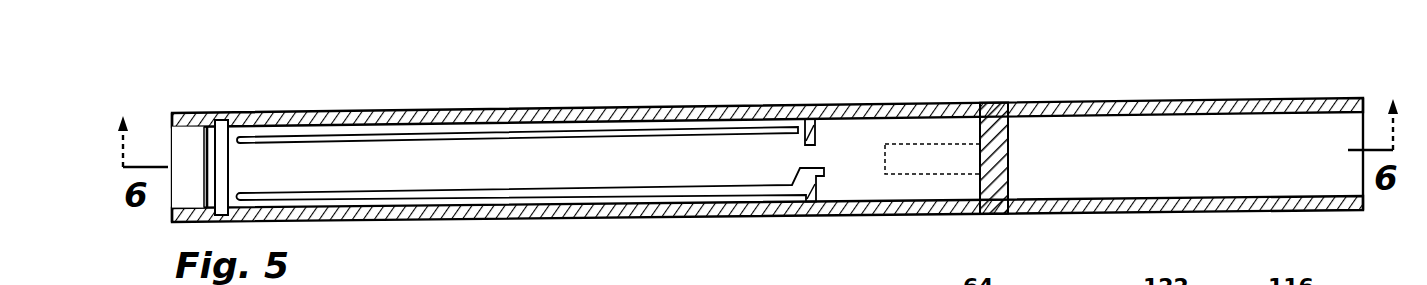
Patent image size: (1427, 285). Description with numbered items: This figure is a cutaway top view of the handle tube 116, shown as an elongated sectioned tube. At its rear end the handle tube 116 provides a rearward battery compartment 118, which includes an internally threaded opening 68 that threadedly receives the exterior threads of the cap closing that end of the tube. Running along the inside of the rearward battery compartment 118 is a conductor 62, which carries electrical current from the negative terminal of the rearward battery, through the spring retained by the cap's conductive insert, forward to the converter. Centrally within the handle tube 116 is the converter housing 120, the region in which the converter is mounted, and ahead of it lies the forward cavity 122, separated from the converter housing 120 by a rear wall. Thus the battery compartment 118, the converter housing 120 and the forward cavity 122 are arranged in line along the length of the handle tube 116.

The internally threaded opening 68 is at (170, 155).
The rearward battery compartment 118 is at (510, 162).
The conductor 62 is at (362, 192).
The converter housing 120 is at (905, 132).
The forward cavity 122 is at (1053, 140).
The handle tube 116 is at (1185, 103).